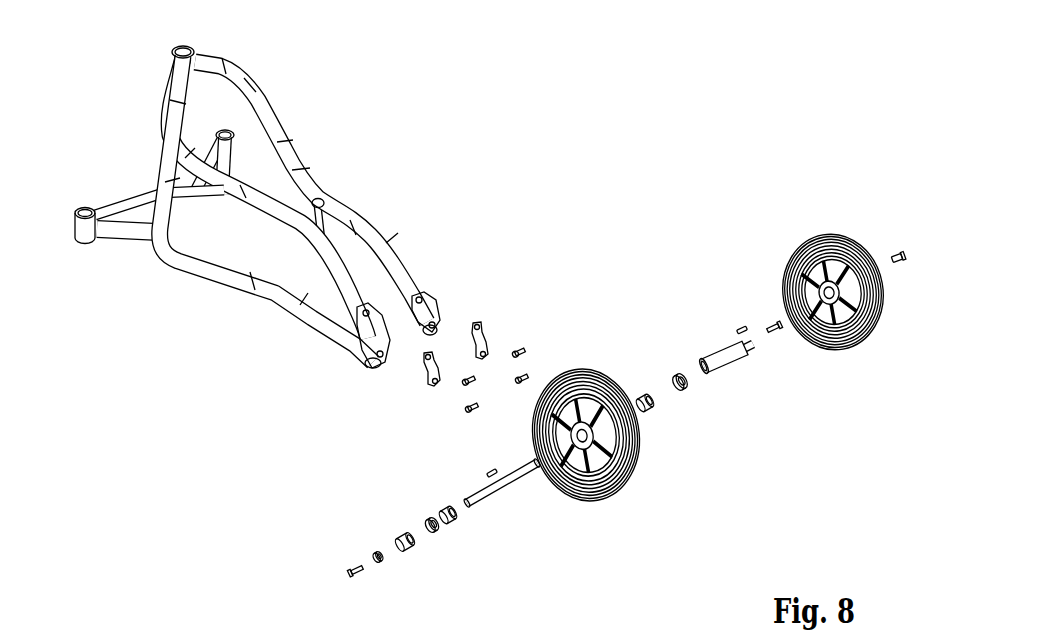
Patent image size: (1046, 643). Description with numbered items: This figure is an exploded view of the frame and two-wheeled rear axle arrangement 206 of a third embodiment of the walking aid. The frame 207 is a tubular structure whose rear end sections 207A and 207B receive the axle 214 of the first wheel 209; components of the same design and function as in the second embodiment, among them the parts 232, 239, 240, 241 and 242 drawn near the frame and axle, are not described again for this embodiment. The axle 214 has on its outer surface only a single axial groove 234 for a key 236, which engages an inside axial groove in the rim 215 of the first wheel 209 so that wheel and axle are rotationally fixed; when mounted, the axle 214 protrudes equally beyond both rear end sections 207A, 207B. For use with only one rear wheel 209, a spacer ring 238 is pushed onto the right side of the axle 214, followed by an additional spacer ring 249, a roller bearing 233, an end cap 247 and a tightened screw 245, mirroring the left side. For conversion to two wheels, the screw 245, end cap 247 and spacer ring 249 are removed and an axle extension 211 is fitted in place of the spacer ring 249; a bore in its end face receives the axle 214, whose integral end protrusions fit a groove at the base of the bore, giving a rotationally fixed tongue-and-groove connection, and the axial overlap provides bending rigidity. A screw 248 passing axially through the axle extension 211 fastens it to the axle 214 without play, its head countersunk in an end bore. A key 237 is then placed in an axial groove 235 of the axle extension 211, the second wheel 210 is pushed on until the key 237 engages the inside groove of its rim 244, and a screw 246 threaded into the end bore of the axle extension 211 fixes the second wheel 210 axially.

The wheel assembly 206 is at (658, 190).
The frame 207 is at (360, 226).
The rear end section of frame 207A is at (360, 331).
The rear end section of frame 207B is at (427, 298).
The first wheel 209 is at (628, 480).
The second wheel 210 is at (826, 244).
The axle extension 211 is at (728, 362).
The axle 214 is at (520, 473).
The rim 215 is at (609, 466).
The nut 232 is at (435, 530).
The roller bearing 233 is at (690, 388).
The axial groove 234 is at (490, 483).
The axial groove 235 is at (738, 340).
The key 236 is at (490, 472).
The key 237 is at (745, 326).
The spacer ring 238 is at (444, 512).
The bushing 239 is at (652, 412).
The bracket 240 is at (423, 378).
The bracket 241 is at (484, 333).
The screws 242 is at (524, 378).
The rim 244 is at (802, 243).
The screw 245 is at (348, 571).
The screw 246 is at (893, 248).
The end cap 247 is at (372, 551).
The screw 248 is at (783, 333).
The spacer ring 249 is at (398, 539).